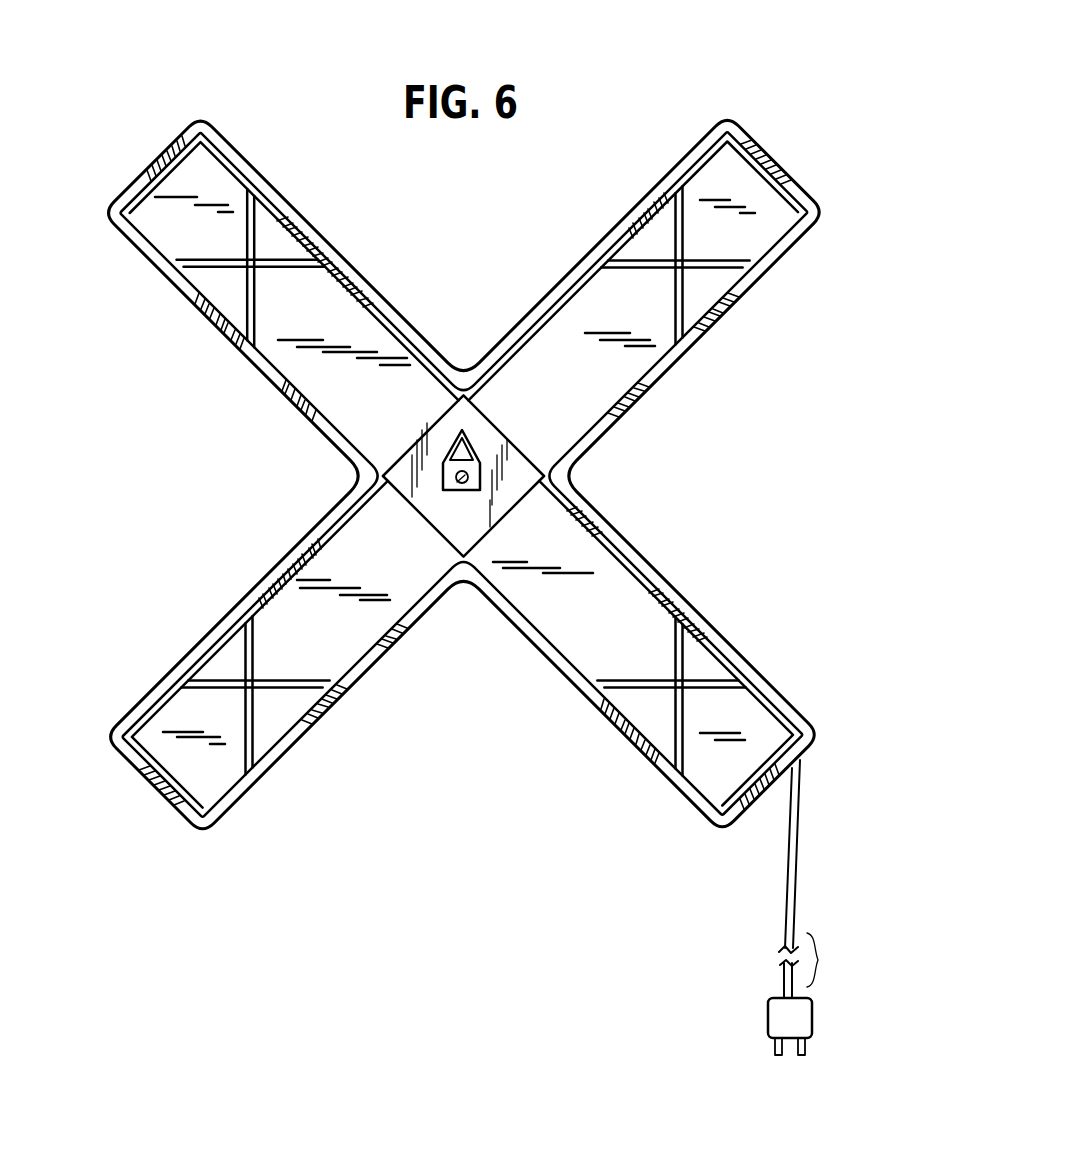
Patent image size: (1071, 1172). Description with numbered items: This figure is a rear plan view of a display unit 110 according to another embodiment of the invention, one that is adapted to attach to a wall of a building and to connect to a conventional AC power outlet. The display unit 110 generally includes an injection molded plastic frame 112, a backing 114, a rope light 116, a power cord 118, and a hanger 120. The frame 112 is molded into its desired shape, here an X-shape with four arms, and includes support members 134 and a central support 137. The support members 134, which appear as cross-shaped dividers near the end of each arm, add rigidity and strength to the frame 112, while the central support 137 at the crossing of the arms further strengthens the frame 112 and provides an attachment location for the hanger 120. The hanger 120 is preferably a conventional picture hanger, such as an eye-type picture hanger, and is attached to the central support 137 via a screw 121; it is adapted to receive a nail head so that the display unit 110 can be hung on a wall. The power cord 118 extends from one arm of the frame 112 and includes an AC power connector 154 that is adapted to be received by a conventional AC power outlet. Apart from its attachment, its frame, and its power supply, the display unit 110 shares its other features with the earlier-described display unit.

The display unit 110 is at (606, 148).
The plastic frame 112 is at (648, 370).
The backing 114 is at (613, 607).
The rope light 116 is at (737, 653).
The power cord 118 is at (789, 902).
The hanger 120 is at (443, 470).
The screw 121 is at (450, 488).
The support members 134 is at (250, 240).
The central support 137 is at (462, 515).
The AC power connector 154 is at (783, 1018).